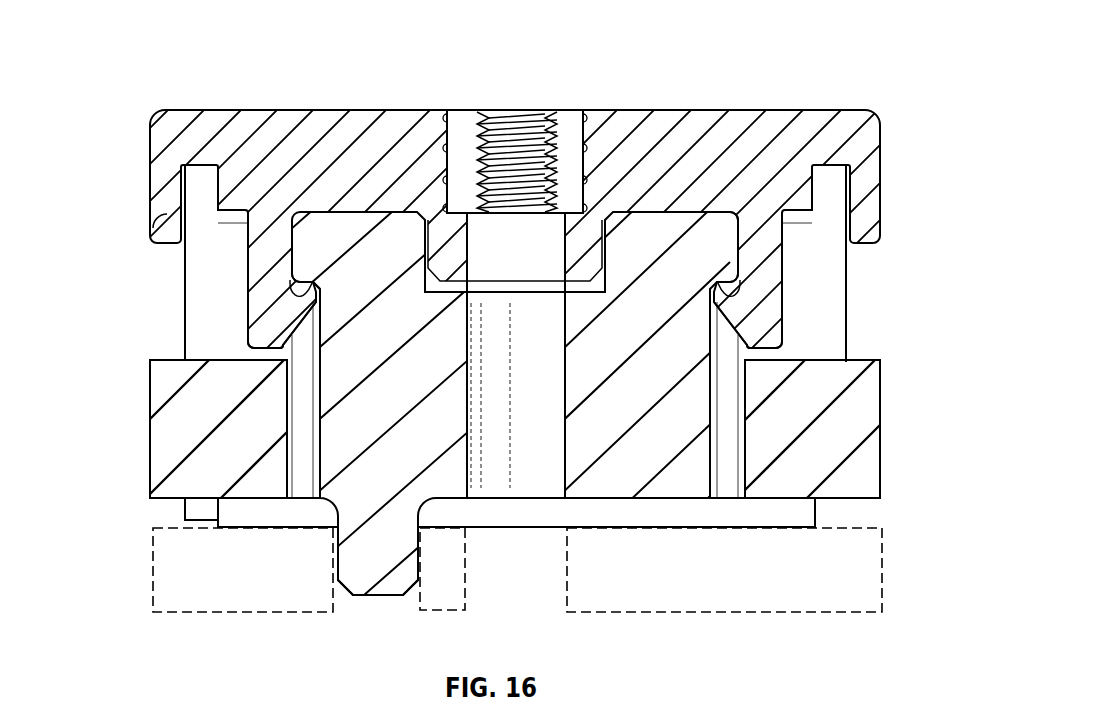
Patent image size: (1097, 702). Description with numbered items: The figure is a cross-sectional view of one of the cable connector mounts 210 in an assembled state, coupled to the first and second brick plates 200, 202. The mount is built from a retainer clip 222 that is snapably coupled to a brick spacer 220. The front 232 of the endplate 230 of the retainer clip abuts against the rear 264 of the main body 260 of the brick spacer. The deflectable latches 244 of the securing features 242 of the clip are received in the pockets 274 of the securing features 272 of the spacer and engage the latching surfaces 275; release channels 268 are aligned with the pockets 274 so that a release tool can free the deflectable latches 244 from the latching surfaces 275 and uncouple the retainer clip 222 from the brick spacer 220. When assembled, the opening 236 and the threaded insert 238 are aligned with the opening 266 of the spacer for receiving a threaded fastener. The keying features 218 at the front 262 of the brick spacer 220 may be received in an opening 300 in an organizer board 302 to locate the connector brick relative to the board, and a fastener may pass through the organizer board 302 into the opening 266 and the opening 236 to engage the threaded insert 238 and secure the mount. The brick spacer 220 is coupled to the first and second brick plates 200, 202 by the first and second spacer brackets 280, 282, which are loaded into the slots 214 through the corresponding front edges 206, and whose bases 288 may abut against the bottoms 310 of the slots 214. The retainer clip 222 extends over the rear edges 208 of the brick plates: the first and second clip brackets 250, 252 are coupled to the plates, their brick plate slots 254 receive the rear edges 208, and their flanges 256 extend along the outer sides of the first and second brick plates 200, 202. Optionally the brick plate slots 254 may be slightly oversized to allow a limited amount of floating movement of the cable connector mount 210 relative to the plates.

The first brick plate 200 is at (198, 310).
The second brick plate 202 is at (836, 290).
The front edge 206 is at (198, 522).
The rear edge 208 is at (203, 166).
The cable connector mount 210 is at (667, 82).
The slot 214 is at (190, 512).
The keying feature 218 is at (368, 600).
The brick spacer 220 is at (518, 518).
The retainer clip 222 is at (632, 128).
The endplate 230 is at (376, 120).
The front 232 is at (676, 207).
The opening 236 is at (543, 236).
The threaded insert 238 is at (481, 104).
The securing feature 242 is at (796, 300).
The deflectable latch 244 is at (268, 314).
The first clip bracket 250 is at (134, 164).
The second clip bracket 252 is at (897, 180).
The brick plate slot 254 is at (226, 153).
The flange 256 is at (166, 214).
The main body 260 is at (620, 480).
The front 262 is at (712, 532).
The rear 264 is at (702, 212).
The opening 266 is at (494, 485).
The release channel 268 is at (302, 482).
The securing feature 272 is at (306, 338).
The pocket 274 is at (318, 274).
The latching surface 275 is at (291, 285).
The first spacer bracket 280 is at (145, 448).
The second spacer bracket 282 is at (886, 415).
The base 288 is at (241, 483).
The opening 300 is at (393, 610).
The organizer board 302 is at (186, 612).
The bottom 310 is at (203, 361).